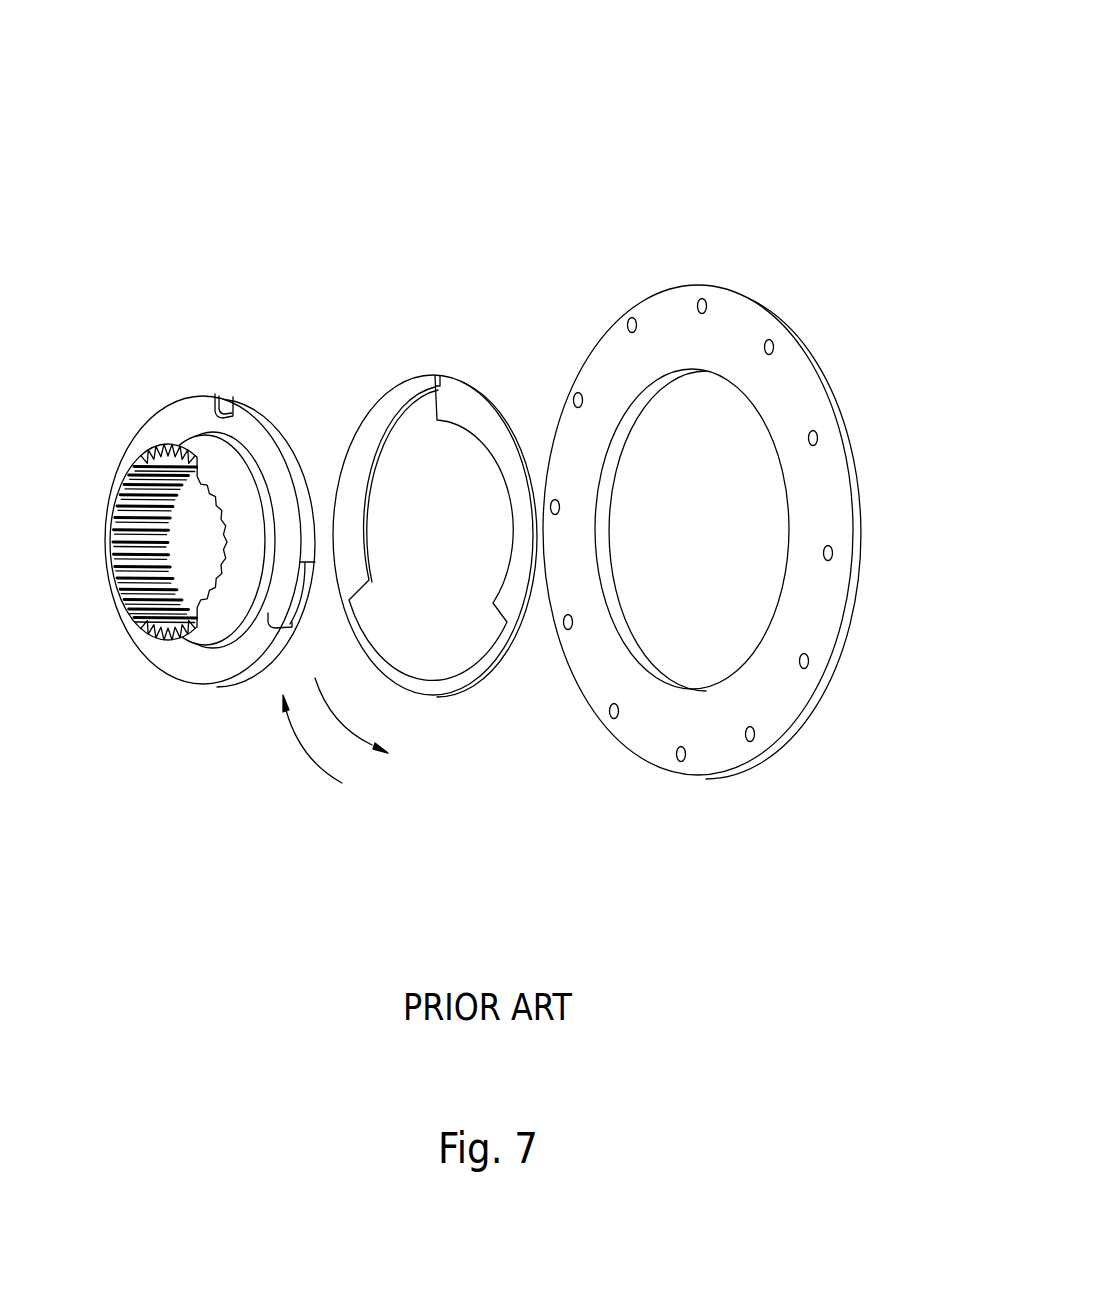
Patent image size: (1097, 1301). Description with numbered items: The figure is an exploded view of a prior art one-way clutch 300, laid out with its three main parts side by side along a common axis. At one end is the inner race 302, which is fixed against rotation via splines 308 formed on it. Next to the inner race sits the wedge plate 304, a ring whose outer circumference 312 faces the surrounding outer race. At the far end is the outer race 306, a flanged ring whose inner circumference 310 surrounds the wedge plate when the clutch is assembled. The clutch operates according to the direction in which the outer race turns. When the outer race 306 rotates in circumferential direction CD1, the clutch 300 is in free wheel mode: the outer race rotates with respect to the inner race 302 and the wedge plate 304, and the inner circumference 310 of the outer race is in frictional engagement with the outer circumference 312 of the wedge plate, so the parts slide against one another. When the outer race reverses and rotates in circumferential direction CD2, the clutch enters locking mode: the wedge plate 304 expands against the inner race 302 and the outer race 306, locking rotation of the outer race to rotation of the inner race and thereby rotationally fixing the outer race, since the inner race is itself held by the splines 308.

The one-way clutch 300 is at (634, 111).
The inner race 302 is at (190, 378).
The wedge plate 304 is at (398, 363).
The outer race 306 is at (574, 338).
The splines 308 is at (143, 470).
The inner circumference 310 is at (730, 679).
The outer circumference 312 is at (435, 697).
The circumferential direction CD1 is at (343, 732).
The circumferential direction CD2 is at (305, 753).